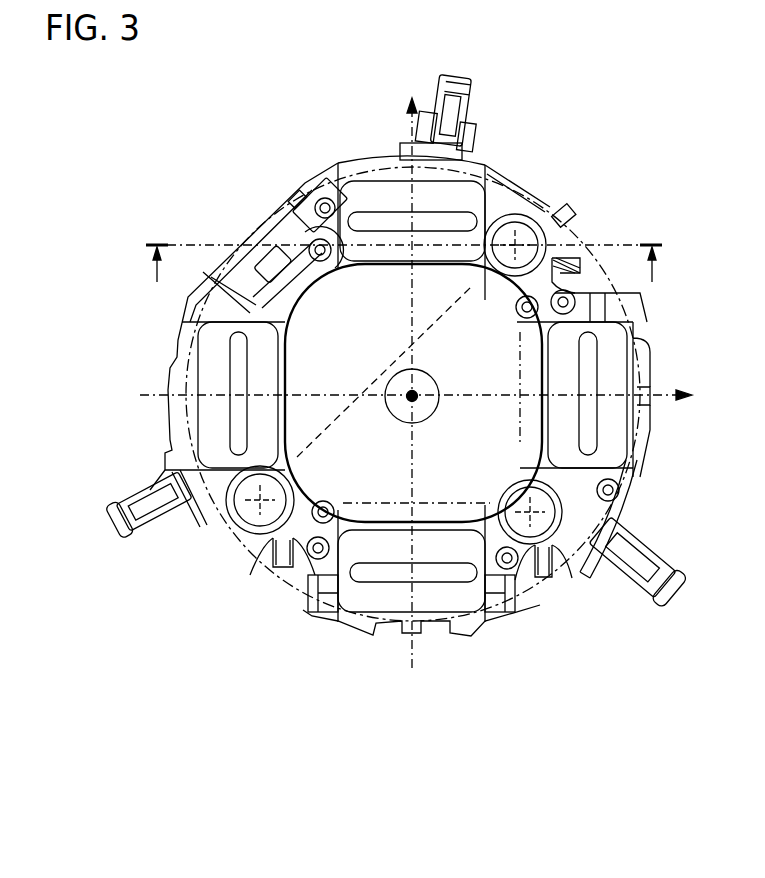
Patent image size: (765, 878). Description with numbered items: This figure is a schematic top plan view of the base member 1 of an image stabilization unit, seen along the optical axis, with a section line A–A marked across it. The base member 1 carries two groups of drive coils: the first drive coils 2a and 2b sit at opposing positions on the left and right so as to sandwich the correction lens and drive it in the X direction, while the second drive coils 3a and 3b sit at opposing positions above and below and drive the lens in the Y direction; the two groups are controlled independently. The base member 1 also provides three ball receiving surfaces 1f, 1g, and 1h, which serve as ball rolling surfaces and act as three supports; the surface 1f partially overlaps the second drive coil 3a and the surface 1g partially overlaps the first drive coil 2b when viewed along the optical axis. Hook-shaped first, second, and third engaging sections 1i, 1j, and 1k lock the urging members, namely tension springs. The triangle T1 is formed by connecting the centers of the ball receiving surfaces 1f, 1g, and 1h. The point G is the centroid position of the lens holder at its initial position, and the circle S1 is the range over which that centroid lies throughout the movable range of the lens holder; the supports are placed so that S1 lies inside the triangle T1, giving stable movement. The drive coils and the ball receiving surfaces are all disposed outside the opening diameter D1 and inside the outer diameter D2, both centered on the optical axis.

The base member 1 is at (370, 158).
The ball receiving surface 1f is at (523, 230).
The ball receiving surface 1g is at (243, 512).
The ball receiving surface 1h is at (545, 525).
The first engaging section 1i is at (590, 260).
The second engaging section 1j is at (265, 558).
The third engaging section 1k is at (555, 568).
The first drive coil 2a is at (617, 347).
The first drive coil 2b is at (207, 363).
The second drive coil 3a is at (472, 196).
The second drive coil 3b is at (345, 592).
The centroid position G is at (420, 390).
The range of centroid position S1 is at (433, 417).
The diameter of opening D1 is at (297, 369).
The outer diameter D2 is at (255, 232).
The triangle T1 is at (607, 433).
The X direction X is at (427, 397).
The Y direction Y is at (409, 367).
The section line A- A is at (404, 264).